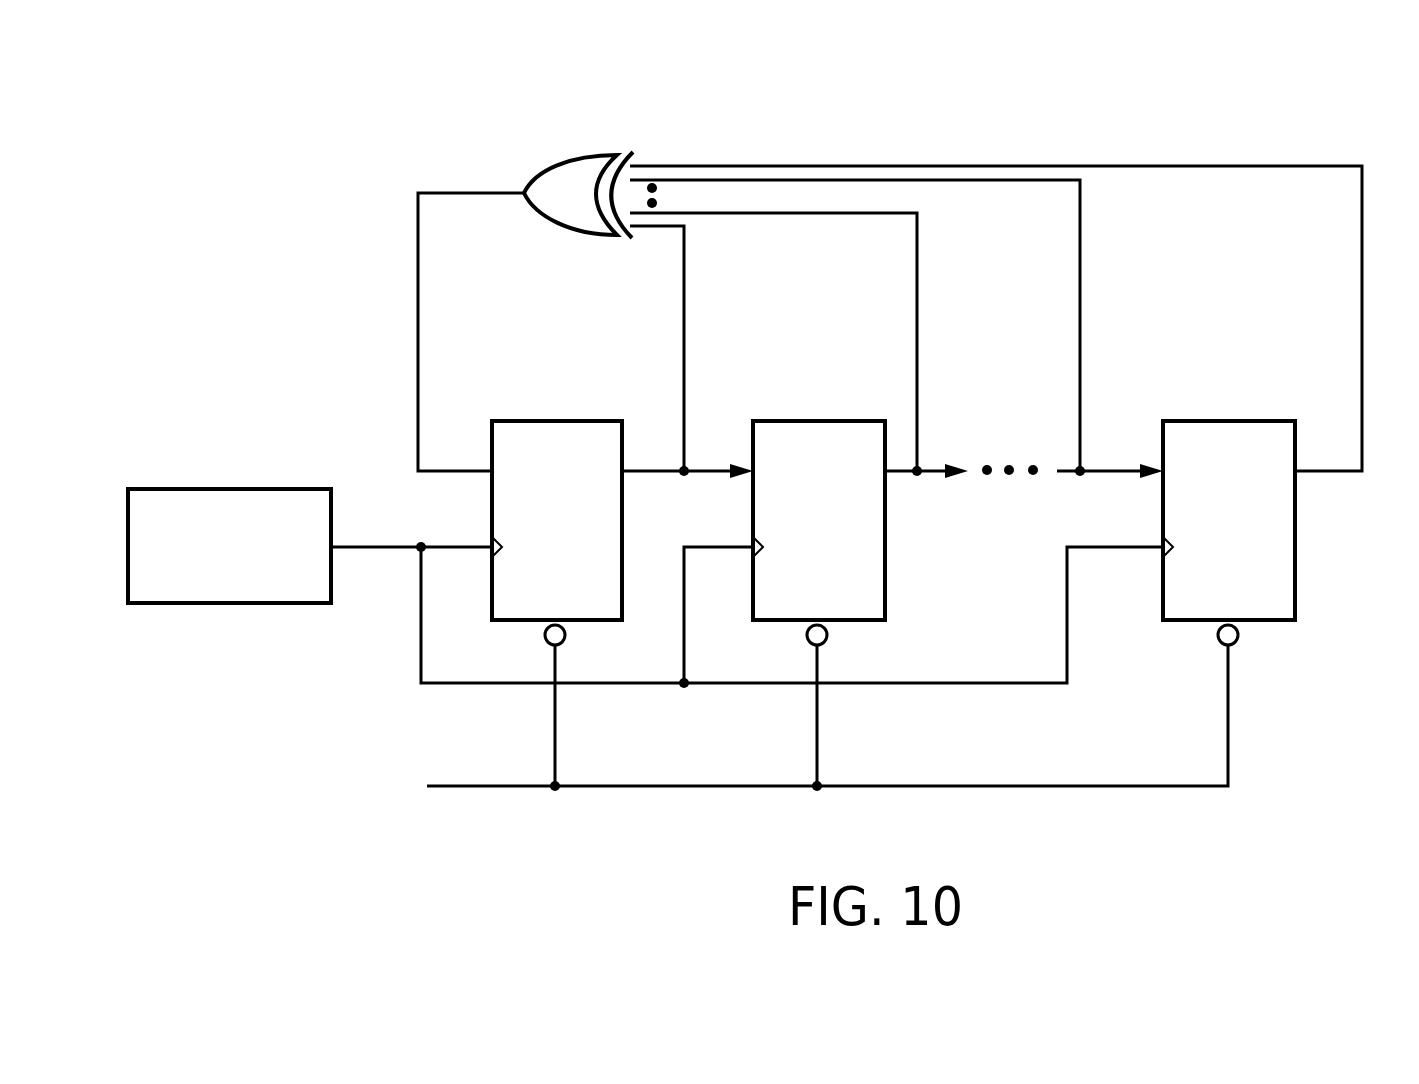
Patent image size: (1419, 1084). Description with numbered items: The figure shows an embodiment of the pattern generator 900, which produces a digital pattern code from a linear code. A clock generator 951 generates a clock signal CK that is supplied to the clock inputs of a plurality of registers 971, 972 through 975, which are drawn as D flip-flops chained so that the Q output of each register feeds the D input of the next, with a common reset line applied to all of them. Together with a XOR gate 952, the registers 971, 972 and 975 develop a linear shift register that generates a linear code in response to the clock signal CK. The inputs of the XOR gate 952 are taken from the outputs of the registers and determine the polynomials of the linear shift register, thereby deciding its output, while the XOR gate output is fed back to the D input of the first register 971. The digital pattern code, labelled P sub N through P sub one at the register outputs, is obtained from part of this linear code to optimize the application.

The pattern generator 900 is at (1357, 90).
The clock generator 951 is at (222, 487).
The XOR gate 952 is at (554, 238).
The register 971 is at (553, 419).
The register 972 is at (815, 419).
The register 975 is at (1228, 419).